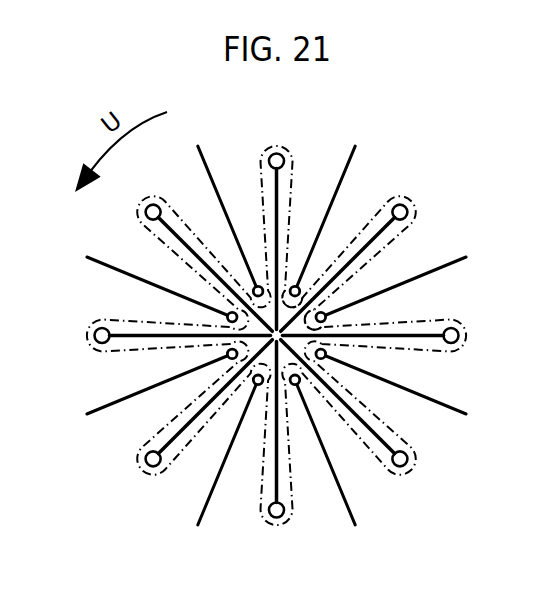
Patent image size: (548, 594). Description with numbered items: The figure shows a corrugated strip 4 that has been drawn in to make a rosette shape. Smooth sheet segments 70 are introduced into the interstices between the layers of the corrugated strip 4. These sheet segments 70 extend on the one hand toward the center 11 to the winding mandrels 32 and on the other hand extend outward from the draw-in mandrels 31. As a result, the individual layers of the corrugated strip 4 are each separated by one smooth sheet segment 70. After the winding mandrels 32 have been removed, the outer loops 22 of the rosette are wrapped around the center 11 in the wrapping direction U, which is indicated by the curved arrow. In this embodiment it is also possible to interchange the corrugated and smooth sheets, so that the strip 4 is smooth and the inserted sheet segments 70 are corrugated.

The corrugated strip 4 is at (170, 236).
The center 11 is at (222, 314).
The outer loops 22 is at (286, 176).
The draw-in mandrels 31 is at (303, 290).
The winding mandrels 32 is at (92, 340).
The smooth sheet segments 70 is at (178, 432).